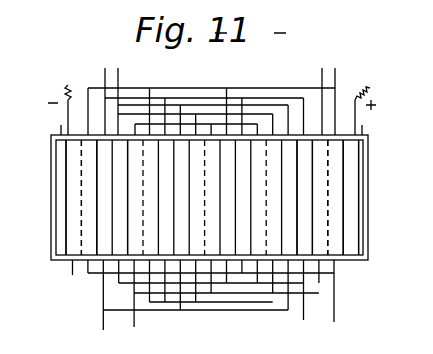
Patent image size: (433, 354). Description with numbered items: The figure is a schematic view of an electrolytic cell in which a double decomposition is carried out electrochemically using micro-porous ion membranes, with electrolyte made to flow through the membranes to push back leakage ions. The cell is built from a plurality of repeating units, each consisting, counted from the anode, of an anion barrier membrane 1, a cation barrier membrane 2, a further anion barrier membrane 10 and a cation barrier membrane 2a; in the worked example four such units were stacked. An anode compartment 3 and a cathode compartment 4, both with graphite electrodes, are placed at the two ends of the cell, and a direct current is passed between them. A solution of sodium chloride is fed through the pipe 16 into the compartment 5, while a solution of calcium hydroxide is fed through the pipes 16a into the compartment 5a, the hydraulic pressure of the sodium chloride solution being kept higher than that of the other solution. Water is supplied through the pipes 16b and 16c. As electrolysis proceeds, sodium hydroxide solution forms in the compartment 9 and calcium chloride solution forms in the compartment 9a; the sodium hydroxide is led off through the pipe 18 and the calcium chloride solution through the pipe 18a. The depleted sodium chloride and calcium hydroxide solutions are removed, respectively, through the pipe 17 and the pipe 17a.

The anion barrier membrane 1 is at (82, 238).
The cation barrier membrane 2 is at (125, 242).
The cation barrier membrane 2a is at (93, 168).
The anode compartment 3 is at (357, 233).
The cathode compartment 4 is at (63, 218).
The compartment 5 is at (333, 242).
The compartment 5a is at (307, 213).
The compartment 9 is at (320, 225).
The compartment 9a is at (290, 205).
The anion barrier membrane 10 is at (112, 192).
The pipe 16 is at (336, 298).
The pipes 16a is at (305, 318).
The pipes 16b is at (136, 325).
The pipes 16c is at (103, 304).
The pipe 17 is at (336, 80).
The pipe 17a is at (120, 82).
The pipe 18 is at (321, 78).
The pipe 18a is at (105, 80).